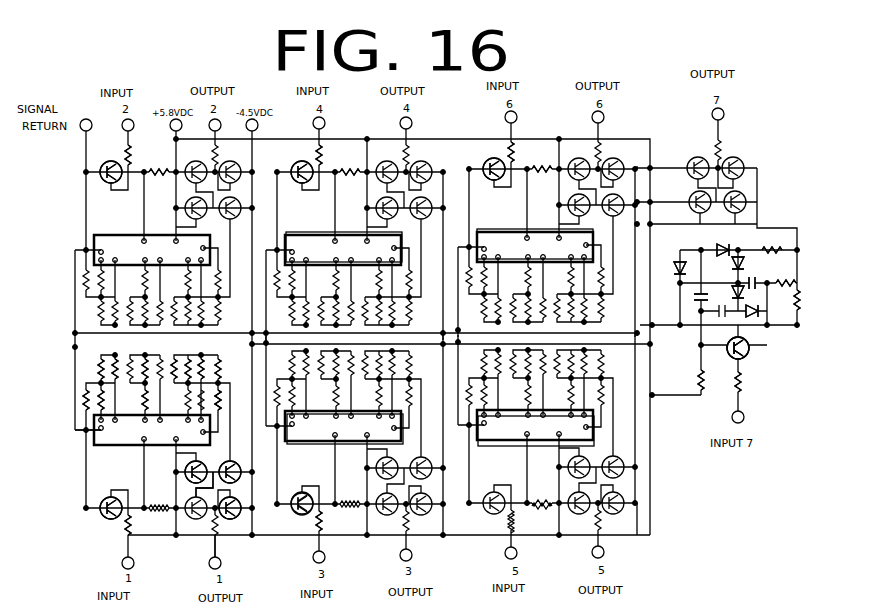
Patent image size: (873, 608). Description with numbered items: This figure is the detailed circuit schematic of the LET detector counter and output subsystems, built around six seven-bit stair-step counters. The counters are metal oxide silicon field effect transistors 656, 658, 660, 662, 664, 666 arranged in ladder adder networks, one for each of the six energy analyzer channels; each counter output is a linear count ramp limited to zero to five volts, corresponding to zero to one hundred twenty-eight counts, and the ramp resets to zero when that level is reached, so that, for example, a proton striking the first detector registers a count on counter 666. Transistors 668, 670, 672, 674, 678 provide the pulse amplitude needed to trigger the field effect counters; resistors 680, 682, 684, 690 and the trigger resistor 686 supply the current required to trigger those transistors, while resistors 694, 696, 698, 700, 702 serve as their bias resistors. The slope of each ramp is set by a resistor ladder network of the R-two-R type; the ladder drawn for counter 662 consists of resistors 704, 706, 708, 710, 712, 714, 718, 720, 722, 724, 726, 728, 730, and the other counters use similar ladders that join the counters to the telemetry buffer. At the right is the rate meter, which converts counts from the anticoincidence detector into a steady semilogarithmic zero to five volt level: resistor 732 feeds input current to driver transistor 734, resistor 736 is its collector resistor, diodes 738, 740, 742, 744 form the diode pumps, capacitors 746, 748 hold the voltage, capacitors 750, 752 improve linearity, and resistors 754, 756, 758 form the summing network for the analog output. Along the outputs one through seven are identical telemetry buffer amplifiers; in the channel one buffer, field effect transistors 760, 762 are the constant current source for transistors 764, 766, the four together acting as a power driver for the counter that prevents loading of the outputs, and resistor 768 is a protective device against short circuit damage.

The metal oxide silicon field effect transistor counter 656 is at (96, 244).
The metal oxide silicon field effect transistor counter 658 is at (312, 214).
The metal oxide silicon field effect transistor counter 660 is at (490, 228).
The metal oxide silicon field effect transistor counter 662 is at (95, 433).
The metal oxide silicon field effect transistor counter 664 is at (292, 446).
The metal oxide silicon field effect transistor counter 666 is at (516, 446).
The transistor 668 is at (102, 515).
The transistor 670 is at (100, 181).
The transistor 672 is at (293, 511).
The transistor 674 is at (299, 164).
The transistor 678 is at (490, 162).
The resistor 680 is at (125, 530).
The resistor 682 is at (131, 153).
The resistor 684 is at (316, 530).
The input resistor 686 is at (322, 152).
The resistor 690 is at (518, 150).
The bias resistor 694 is at (146, 190).
The bias resistor 696 is at (358, 522).
The bias resistor 698 is at (350, 176).
The bias resistor 700 is at (555, 490).
The bias resistor 702 is at (546, 176).
The ladder network resistor 704 is at (78, 428).
The ladder network resistor 706 is at (84, 395).
The ladder network resistor 708 is at (98, 395).
The ladder network resistor 710 is at (96, 366).
The ladder network resistor 712 is at (120, 355).
The ladder network resistor 714 is at (146, 362).
The ladder network resistor 718 is at (188, 362).
The ladder network resistor 720 is at (175, 377).
The ladder network resistor 722 is at (220, 408).
The ladder network resistor 724 is at (221, 392).
The ladder network resistor 726 is at (207, 372).
The ladder network resistor 728 is at (219, 363).
The ladder network resistor 730 is at (207, 400).
The resistor 732 is at (742, 382).
The driver transistor 734 is at (750, 352).
The collector resistor 736 is at (698, 381).
The diode 738 is at (680, 262).
The diode 740 is at (727, 240).
The diode 742 is at (737, 290).
The diode 744 is at (762, 316).
The voltage holding capacitor 746 is at (745, 263).
The voltage holding capacitor 748 is at (760, 280).
The capacitor 750 is at (697, 297).
The capacitor 752 is at (730, 343).
The summing network resistor 754 is at (800, 300).
The summing network resistor 756 is at (792, 283).
The summing network resistor 758 is at (774, 244).
The field effect transistor 760 is at (185, 467).
The field effect transistor 762 is at (232, 522).
The transistor 764 is at (205, 520).
The transistor 766 is at (243, 476).
The resistor 768 is at (212, 552).